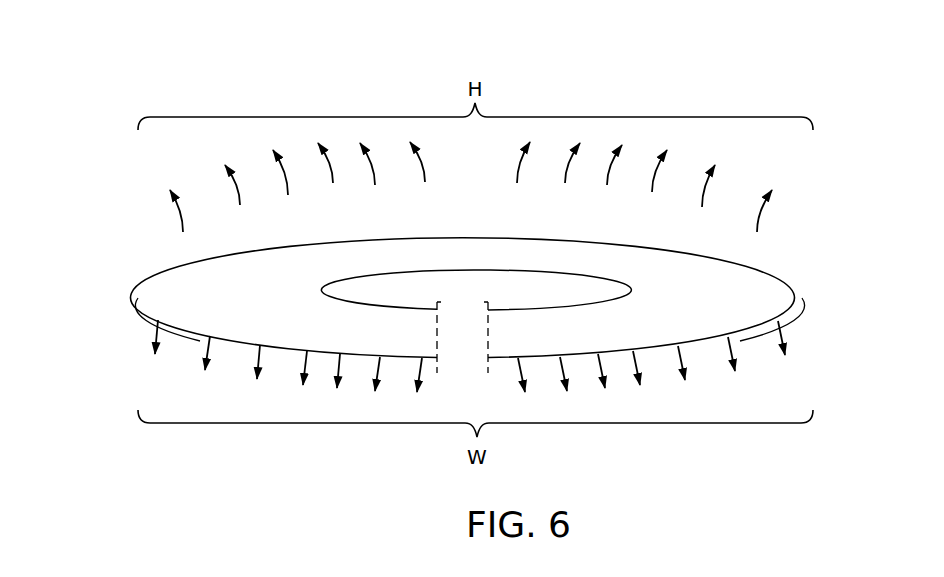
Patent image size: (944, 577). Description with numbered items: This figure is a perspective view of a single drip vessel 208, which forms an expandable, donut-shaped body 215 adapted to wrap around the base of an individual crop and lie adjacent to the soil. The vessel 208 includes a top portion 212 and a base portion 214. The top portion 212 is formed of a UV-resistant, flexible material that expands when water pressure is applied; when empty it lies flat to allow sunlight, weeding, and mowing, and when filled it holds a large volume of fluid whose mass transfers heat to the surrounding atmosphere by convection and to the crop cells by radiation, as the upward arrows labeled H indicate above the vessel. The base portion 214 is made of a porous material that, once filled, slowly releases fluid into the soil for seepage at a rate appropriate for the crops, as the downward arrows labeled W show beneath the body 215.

The drip vessel 208 is at (143, 276).
The top portion 212 is at (256, 304).
The base portion 214 is at (788, 318).
The donut-shaped body 215 is at (155, 302).